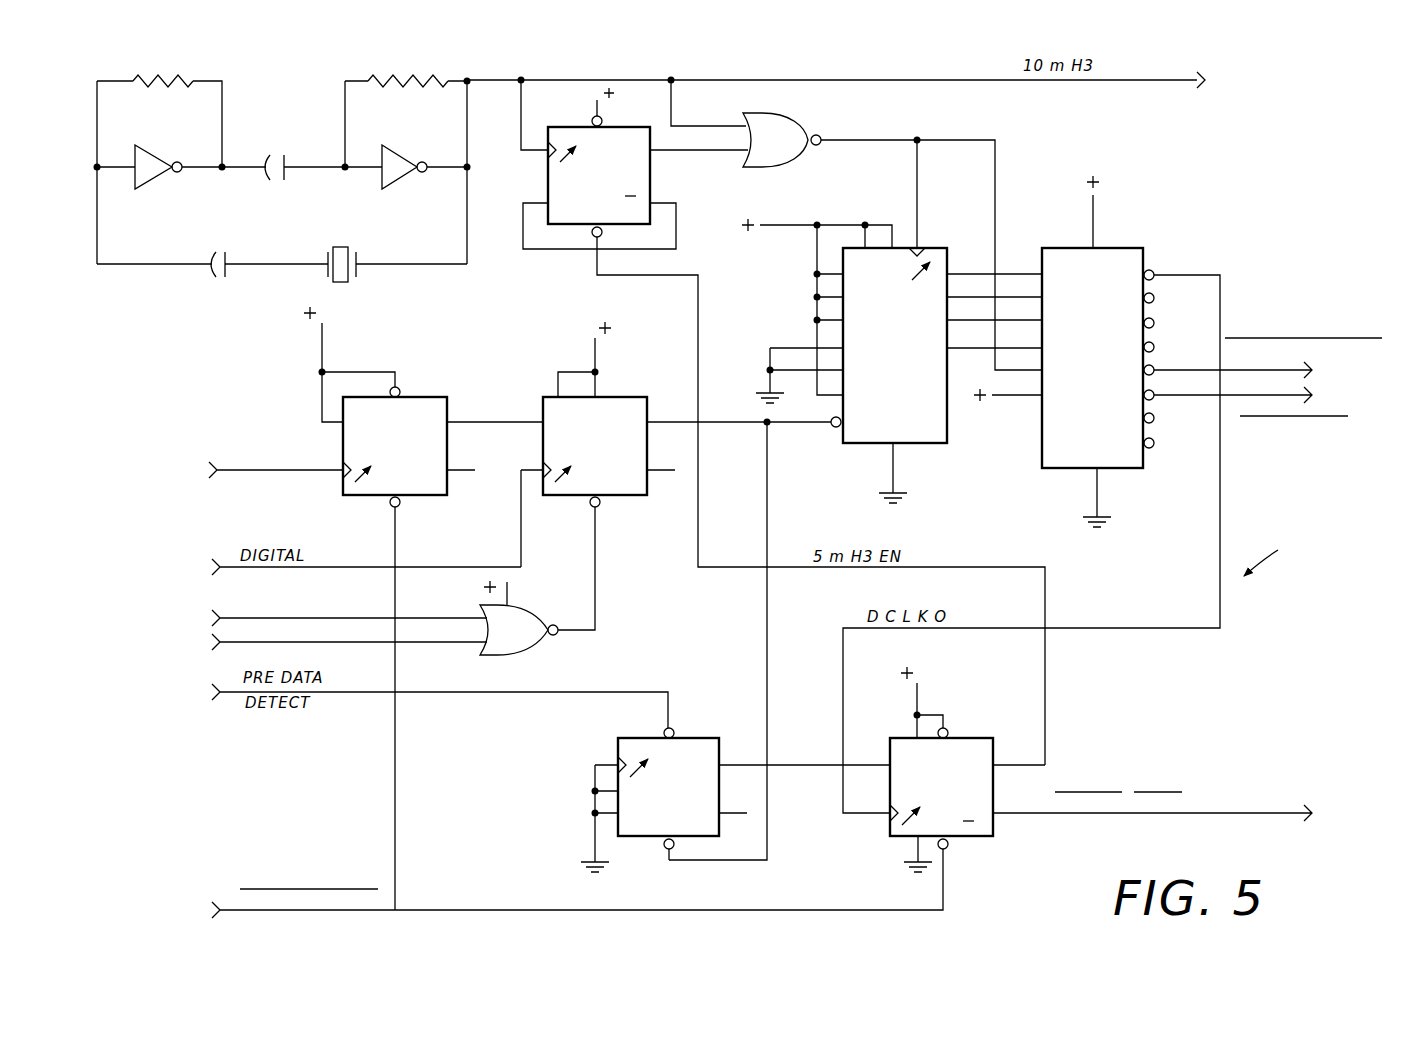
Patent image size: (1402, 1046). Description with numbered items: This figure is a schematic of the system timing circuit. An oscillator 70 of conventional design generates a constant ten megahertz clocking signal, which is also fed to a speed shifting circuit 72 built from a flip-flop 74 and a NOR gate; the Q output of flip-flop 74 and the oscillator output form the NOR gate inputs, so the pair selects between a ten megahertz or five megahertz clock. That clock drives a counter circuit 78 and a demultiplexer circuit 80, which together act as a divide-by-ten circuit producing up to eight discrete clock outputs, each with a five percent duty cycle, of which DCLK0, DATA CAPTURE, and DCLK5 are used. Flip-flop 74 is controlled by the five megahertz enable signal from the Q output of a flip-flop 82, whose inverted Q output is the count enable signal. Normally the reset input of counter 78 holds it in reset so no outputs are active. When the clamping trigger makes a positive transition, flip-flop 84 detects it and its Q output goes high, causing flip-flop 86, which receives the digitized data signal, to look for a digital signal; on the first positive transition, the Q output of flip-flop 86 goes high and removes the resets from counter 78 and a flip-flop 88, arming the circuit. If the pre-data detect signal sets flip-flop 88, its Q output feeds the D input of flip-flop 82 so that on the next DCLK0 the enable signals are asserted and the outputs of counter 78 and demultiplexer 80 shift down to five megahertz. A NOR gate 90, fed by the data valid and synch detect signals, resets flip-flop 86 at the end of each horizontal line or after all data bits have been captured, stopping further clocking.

The oscillator 70 is at (308, 78).
The speed shifting circuit 72 is at (737, 120).
The flip-flop 74 is at (657, 178).
The counter circuit 78 is at (844, 361).
The demultiplexer circuit 80 is at (1112, 494).
The flip-flop 82 is at (975, 745).
The flip-flop 84 is at (444, 381).
The flip-flop 86 is at (652, 381).
The flip-flop 88 is at (731, 718).
The NOR gate 90 is at (568, 598).